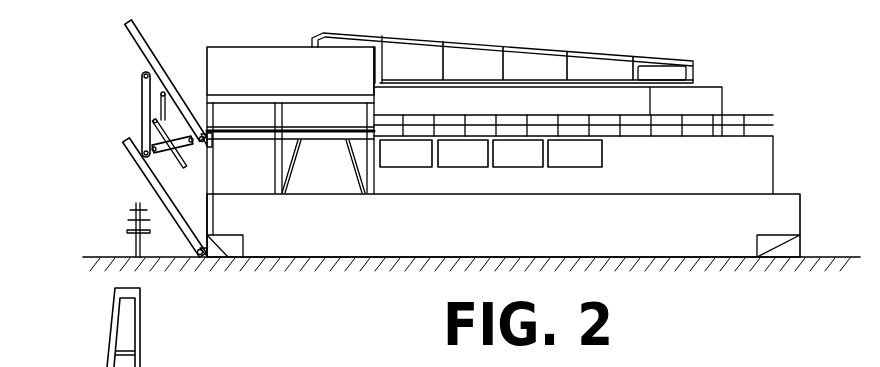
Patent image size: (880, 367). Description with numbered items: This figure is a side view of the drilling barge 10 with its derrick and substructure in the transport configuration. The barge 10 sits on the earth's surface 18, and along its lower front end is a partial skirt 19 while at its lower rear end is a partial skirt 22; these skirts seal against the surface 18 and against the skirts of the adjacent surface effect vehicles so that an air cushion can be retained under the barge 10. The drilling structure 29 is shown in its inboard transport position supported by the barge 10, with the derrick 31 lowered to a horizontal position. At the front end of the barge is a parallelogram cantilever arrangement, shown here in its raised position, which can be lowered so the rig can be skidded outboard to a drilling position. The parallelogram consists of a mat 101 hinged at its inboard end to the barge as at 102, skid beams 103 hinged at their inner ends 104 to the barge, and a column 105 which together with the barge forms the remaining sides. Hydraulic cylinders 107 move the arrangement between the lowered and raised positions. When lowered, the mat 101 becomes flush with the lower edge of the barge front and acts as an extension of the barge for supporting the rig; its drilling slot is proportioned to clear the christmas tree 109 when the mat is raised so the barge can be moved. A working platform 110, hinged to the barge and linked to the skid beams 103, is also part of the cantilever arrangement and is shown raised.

The drilling barge 10 is at (455, 232).
The earth's surface 18 is at (817, 258).
The partial skirt 19 is at (773, 248).
The partial skirt 22 is at (240, 244).
The drilling structure 29 is at (270, 44).
The derrick 31 is at (490, 46).
The mat 101 is at (118, 144).
The hinge 102 is at (200, 232).
The skid beams 103 is at (137, 25).
The inner ends 104 is at (200, 130).
The column 105 is at (140, 99).
The hydraulic cylinders 107 is at (174, 137).
The christmas tree 109 is at (123, 213).
The working platform 110 is at (190, 178).